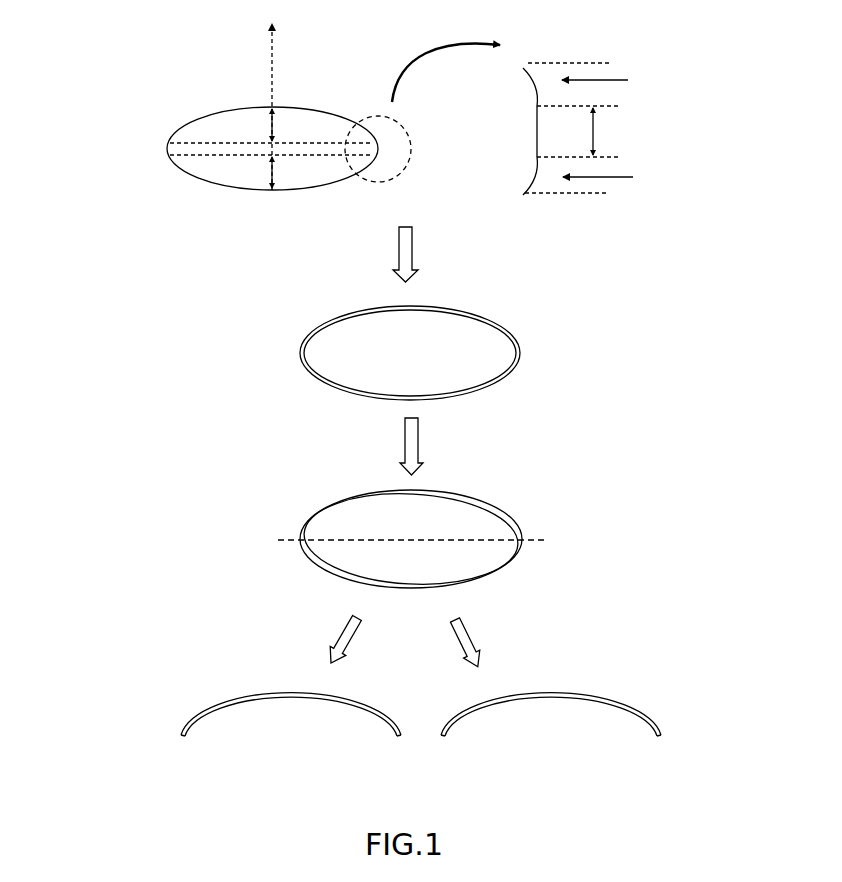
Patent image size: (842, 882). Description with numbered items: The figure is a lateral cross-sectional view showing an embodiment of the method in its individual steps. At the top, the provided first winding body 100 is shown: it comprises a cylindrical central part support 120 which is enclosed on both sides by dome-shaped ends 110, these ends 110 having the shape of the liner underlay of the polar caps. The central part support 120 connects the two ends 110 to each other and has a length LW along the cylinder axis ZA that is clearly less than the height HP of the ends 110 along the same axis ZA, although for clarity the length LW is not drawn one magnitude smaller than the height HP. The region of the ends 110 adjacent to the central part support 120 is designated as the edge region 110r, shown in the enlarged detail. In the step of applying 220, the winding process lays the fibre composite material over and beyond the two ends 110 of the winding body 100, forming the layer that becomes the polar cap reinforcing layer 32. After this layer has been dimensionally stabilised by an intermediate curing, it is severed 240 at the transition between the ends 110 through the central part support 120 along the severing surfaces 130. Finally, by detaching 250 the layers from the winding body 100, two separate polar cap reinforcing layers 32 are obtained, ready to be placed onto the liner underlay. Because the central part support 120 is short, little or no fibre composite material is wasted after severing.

The first winding body 100 is at (218, 82).
The ends 110 is at (185, 117).
The edge region 110r is at (624, 129).
The cylindrical central part support 120 is at (167, 152).
The severing surfaces 130 is at (433, 540).
The applying 220 is at (423, 252).
The severing 240 is at (430, 445).
The detaching 250 is at (338, 633).
The polar cap reinforcing layer 32 is at (322, 318).
The height of the ends HP is at (279, 125).
The cylinder axis ZA is at (273, 107).
The length of the central part support LW is at (600, 131).